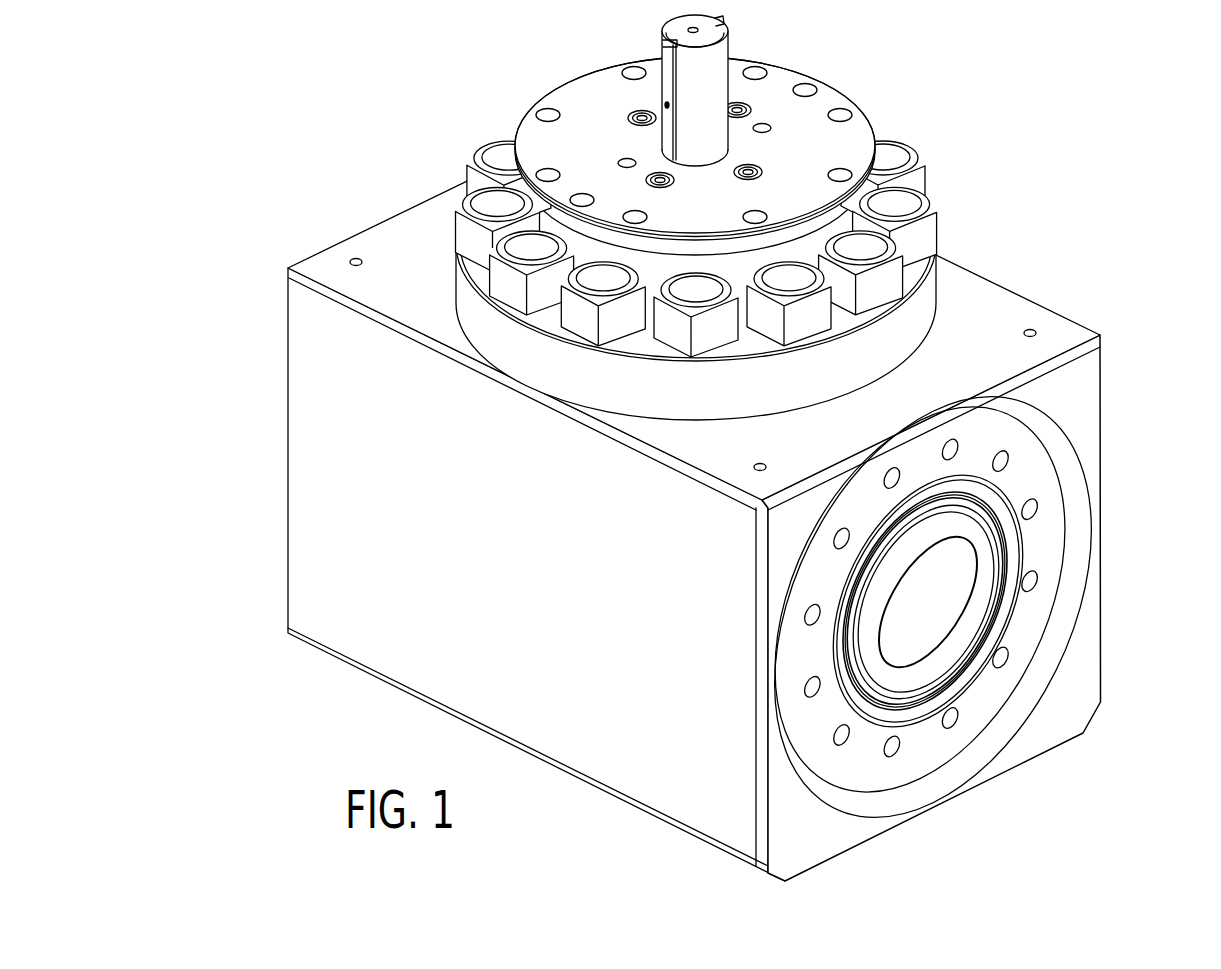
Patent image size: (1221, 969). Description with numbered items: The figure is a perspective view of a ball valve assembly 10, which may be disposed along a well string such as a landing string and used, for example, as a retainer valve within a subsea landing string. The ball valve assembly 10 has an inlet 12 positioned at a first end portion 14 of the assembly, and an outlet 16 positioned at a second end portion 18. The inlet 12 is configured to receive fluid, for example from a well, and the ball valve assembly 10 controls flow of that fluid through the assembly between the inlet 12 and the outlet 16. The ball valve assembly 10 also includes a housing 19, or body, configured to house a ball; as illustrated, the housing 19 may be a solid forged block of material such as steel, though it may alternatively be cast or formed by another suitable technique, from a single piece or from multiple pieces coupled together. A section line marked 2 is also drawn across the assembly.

The ball valve assembly 10 is at (703, 448).
The inlet 12 is at (947, 637).
The first end portion 14 is at (970, 607).
The outlet 16 is at (568, 148).
The second end portion 18 is at (375, 98).
The housing 19 is at (987, 299).
The section line 2 is at (400, 183).